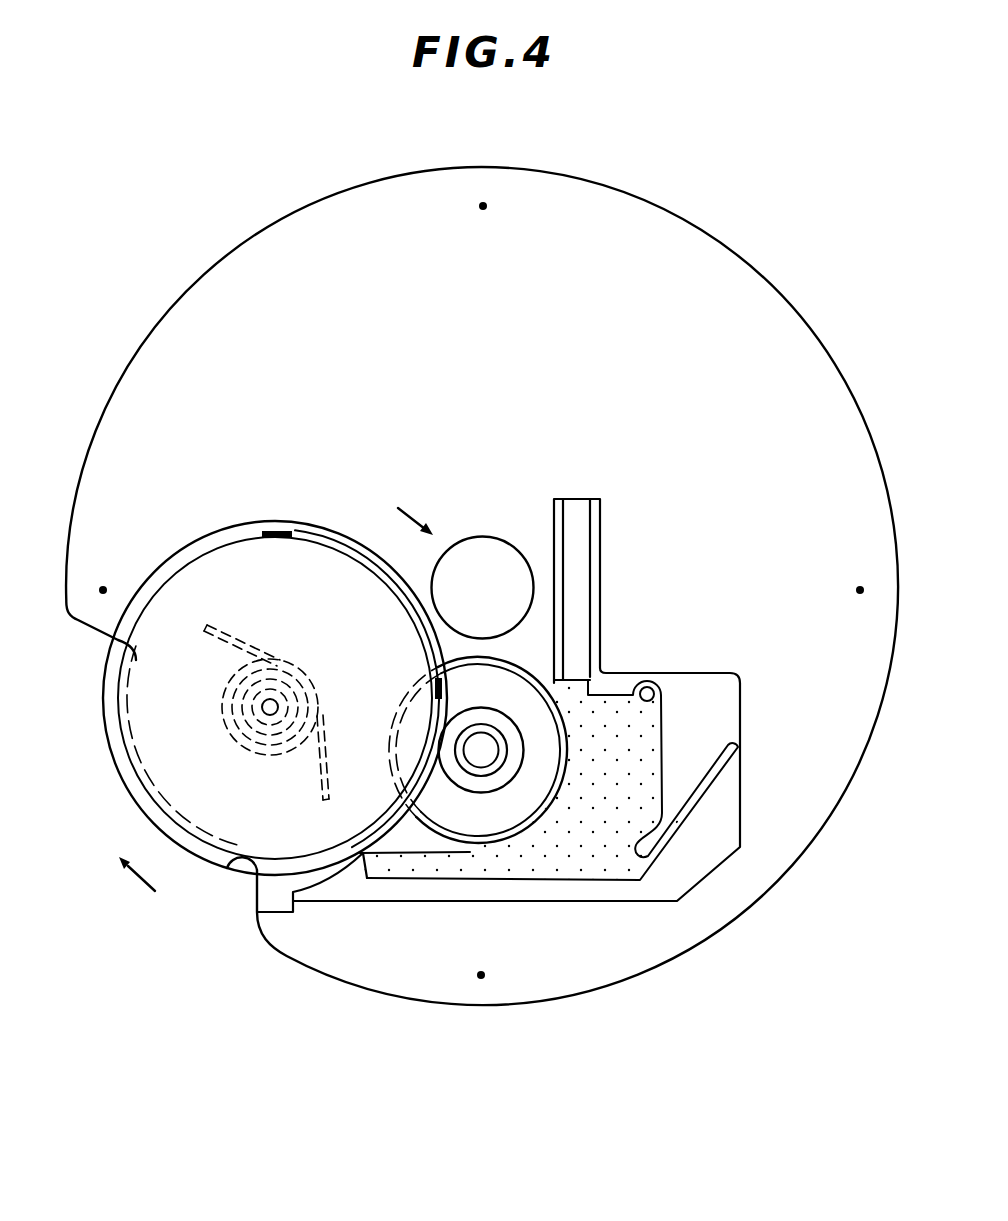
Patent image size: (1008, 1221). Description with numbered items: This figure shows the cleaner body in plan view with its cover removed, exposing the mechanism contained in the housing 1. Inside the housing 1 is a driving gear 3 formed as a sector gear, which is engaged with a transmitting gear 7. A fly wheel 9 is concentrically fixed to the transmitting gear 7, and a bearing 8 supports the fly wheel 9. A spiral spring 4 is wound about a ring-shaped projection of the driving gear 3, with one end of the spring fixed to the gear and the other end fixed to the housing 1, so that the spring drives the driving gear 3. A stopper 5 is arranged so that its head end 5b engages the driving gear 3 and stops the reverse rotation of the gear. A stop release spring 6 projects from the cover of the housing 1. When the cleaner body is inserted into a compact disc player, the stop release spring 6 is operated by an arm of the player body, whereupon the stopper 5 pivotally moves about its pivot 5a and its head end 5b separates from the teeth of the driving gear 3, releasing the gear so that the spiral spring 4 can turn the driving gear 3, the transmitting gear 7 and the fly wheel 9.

The housing 1 is at (700, 244).
The driving gear 3 is at (200, 566).
The spiral spring 4 is at (261, 653).
The stopper 5 is at (643, 729).
The pivot 5a is at (660, 686).
The head end 5b is at (363, 857).
The stop release spring 6 is at (583, 530).
The transmitting gear 7 is at (513, 728).
The bearing 8 is at (477, 773).
The fly wheel 9 is at (510, 684).